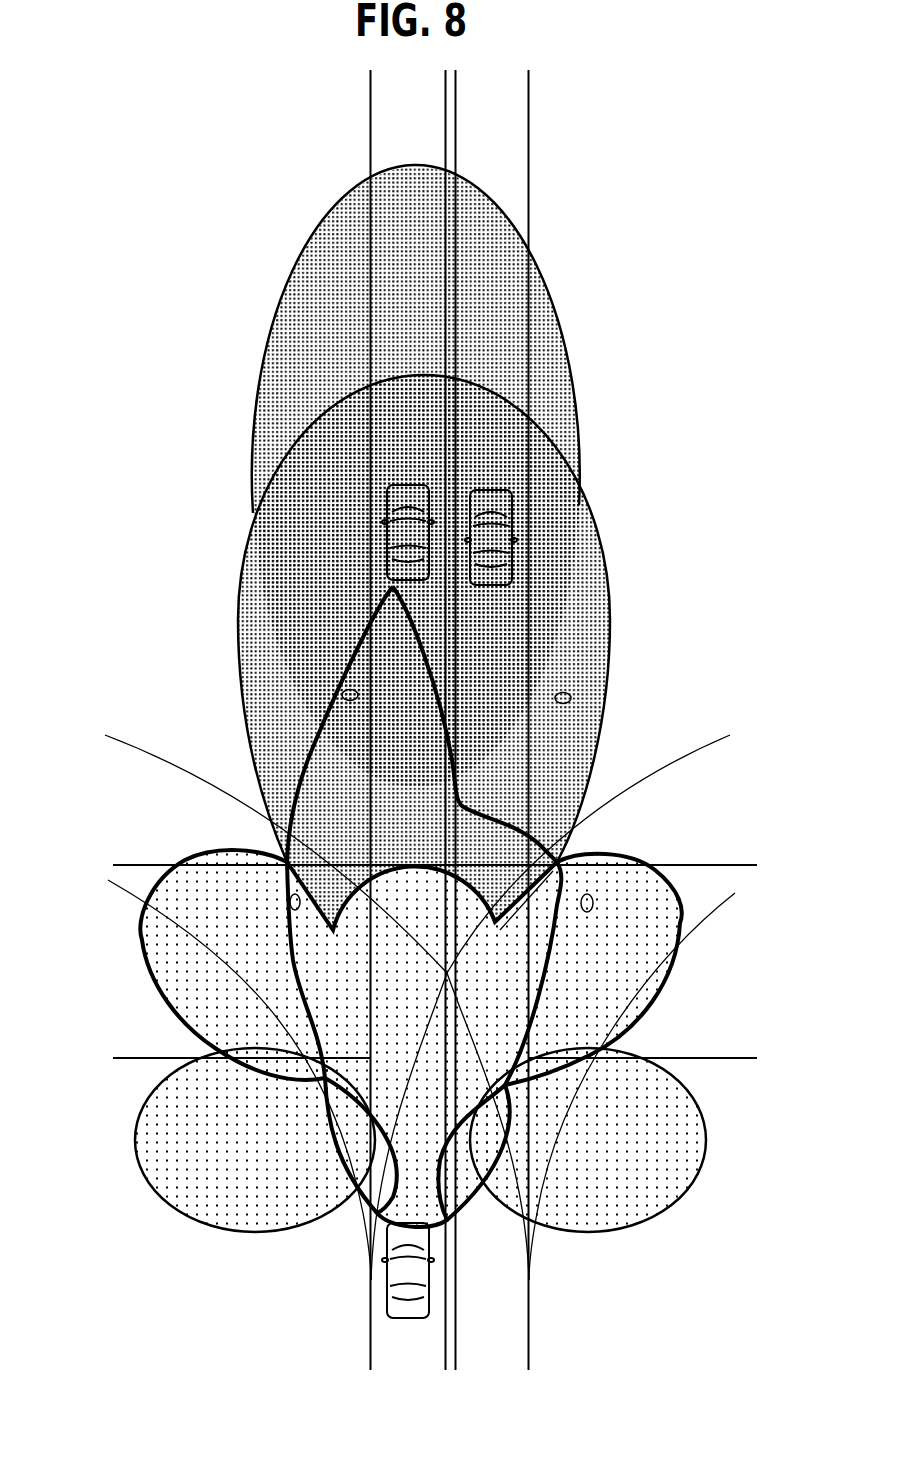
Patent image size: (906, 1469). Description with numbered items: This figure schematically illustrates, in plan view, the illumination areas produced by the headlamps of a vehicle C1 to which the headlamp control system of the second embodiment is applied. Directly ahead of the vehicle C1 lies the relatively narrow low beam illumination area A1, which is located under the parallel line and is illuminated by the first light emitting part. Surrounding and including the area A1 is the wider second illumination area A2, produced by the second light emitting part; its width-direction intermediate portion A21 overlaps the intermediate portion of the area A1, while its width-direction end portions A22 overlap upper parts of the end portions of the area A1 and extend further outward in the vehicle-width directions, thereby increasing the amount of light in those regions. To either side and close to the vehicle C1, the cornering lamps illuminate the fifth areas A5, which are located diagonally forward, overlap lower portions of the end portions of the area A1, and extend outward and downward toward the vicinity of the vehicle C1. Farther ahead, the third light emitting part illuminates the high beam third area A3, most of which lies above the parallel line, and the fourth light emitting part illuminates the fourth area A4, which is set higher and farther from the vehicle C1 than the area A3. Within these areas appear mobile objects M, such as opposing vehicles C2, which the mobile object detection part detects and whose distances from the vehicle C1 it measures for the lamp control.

The illumination area A1 is at (310, 735).
The illumination area A2 is at (410, 1038).
The width-direction intermediate portion A21 is at (553, 867).
The width-direction end portions A22 is at (143, 963).
The third area A3 is at (610, 647).
The fourth area A4 is at (570, 352).
The fifth area A5 is at (140, 1122).
The vehicle C1 is at (387, 1275).
The opposing vehicles C2 is at (387, 540).
The mobile objects M is at (344, 688).